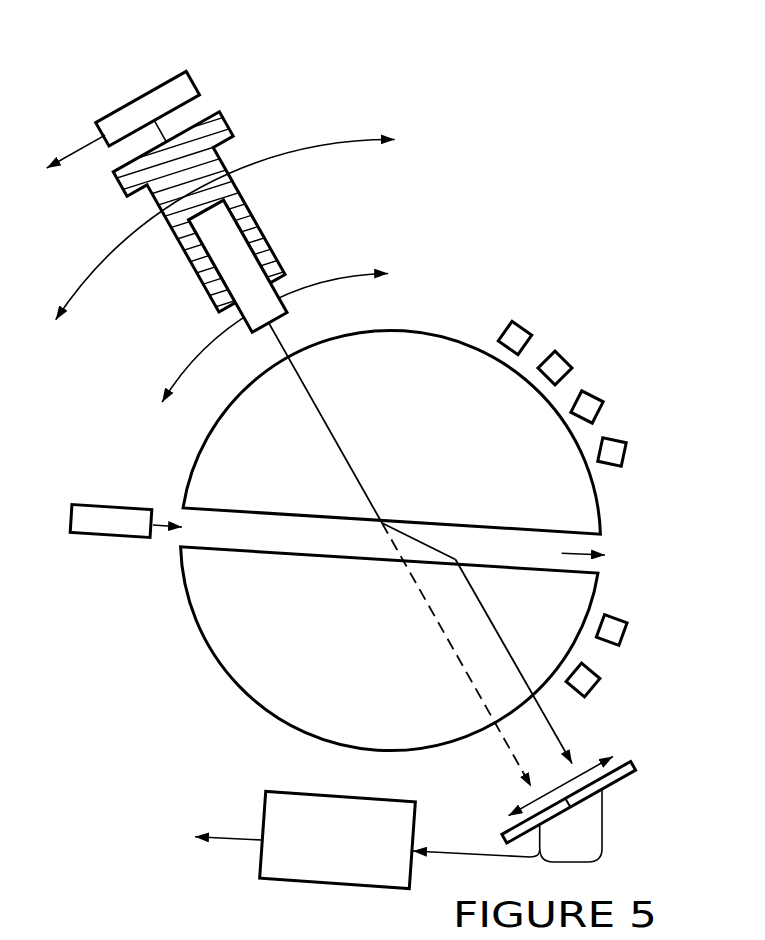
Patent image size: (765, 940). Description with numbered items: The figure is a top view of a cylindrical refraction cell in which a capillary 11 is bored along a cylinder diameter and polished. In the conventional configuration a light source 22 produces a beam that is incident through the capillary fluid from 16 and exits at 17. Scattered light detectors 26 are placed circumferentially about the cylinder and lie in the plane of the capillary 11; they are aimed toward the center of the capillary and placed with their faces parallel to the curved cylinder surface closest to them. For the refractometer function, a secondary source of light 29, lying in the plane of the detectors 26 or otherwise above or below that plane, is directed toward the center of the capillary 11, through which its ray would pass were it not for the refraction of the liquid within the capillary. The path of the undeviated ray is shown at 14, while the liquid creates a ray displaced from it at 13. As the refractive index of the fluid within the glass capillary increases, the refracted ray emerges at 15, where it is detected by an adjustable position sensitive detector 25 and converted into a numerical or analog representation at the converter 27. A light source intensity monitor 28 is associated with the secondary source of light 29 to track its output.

The capillary 11 is at (208, 529).
The displaced ray 13 is at (427, 541).
The undeviated ray path 14 is at (456, 655).
The emerging refracted ray 15 is at (528, 661).
The beam entry point 16 is at (181, 529).
The beam exit point 17 is at (598, 556).
The light source 22 is at (122, 507).
The adjustable position sensitive detector 25 is at (633, 763).
The scattered light detectors 26 is at (508, 320).
The converter 27 is at (305, 839).
The light source intensity monitor 28 is at (187, 70).
The secondary source of light 29 is at (273, 255).